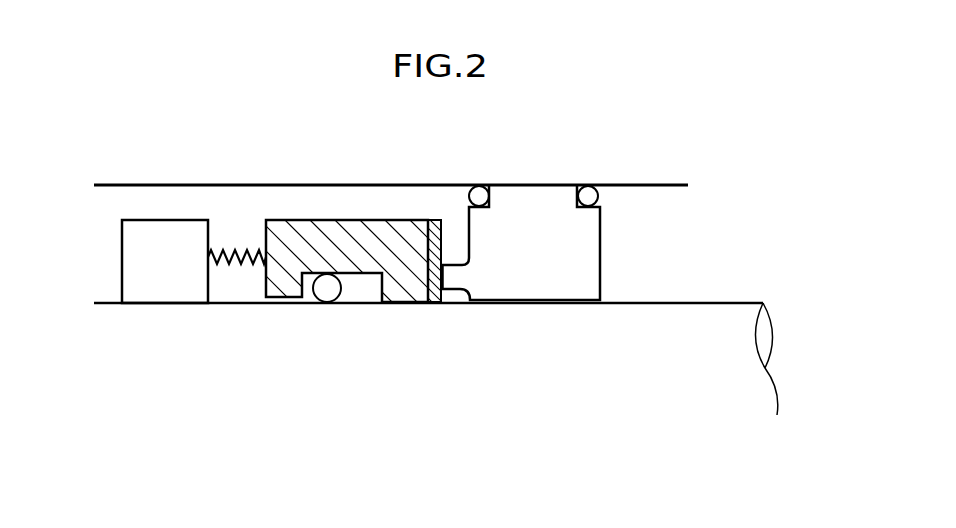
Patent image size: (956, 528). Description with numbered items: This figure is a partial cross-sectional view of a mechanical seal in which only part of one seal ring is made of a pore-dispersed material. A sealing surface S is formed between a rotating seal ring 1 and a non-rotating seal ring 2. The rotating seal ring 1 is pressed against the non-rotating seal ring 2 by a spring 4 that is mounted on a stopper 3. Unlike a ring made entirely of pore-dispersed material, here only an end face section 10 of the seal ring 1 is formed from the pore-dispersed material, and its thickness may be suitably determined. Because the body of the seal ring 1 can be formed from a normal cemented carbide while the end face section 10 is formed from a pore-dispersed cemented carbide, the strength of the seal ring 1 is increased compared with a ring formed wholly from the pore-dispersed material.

The rotating seal ring 1 is at (400, 297).
The non-rotating seal ring 2 is at (583, 260).
The stopper 3 is at (170, 292).
The spring 4 is at (236, 250).
The end face section 10 is at (435, 302).
The sealing surface S is at (447, 280).